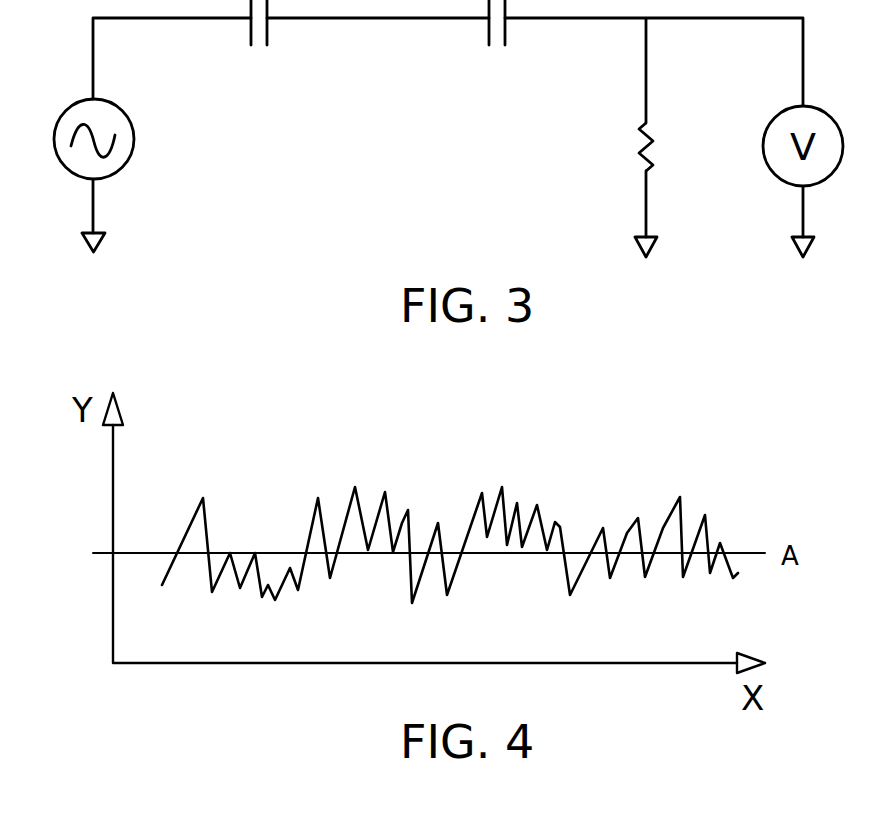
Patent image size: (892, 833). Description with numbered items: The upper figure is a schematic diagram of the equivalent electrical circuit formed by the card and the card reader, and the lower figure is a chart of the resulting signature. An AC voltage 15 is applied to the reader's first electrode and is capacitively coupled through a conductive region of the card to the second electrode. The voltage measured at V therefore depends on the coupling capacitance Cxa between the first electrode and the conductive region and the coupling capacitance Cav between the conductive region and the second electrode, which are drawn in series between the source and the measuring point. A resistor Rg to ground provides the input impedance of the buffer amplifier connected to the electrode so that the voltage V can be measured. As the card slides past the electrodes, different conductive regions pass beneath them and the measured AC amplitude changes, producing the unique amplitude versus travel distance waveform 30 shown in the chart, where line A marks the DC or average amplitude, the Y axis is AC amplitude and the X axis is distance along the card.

In FIG. 3, the AC voltage 15 is at (133, 155).
In FIG. 4, the signature waveform 30 is at (537, 504).
In FIG. 3, the coupling capacitance Cxa is at (257, 53).
In FIG. 3, the coupling capacitance Cav is at (493, 53).
In FIG. 3, the resistor Rg is at (612, 145).